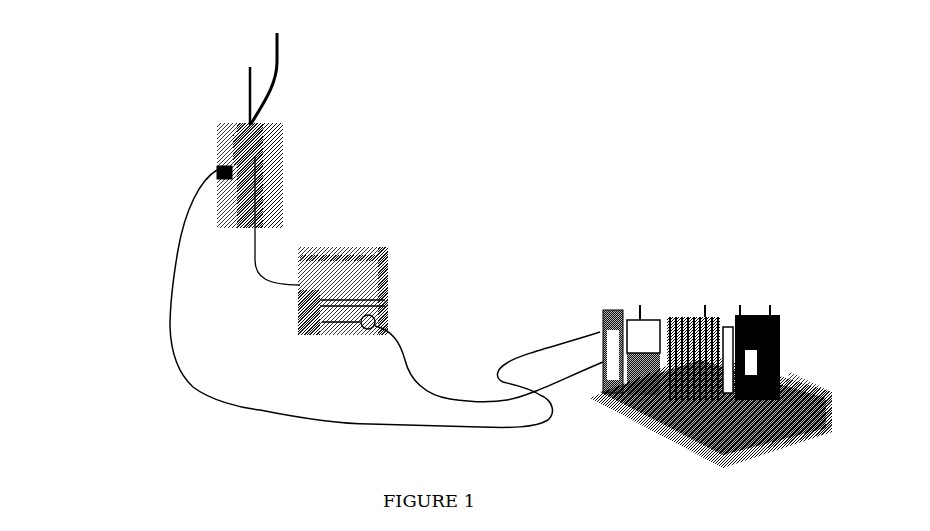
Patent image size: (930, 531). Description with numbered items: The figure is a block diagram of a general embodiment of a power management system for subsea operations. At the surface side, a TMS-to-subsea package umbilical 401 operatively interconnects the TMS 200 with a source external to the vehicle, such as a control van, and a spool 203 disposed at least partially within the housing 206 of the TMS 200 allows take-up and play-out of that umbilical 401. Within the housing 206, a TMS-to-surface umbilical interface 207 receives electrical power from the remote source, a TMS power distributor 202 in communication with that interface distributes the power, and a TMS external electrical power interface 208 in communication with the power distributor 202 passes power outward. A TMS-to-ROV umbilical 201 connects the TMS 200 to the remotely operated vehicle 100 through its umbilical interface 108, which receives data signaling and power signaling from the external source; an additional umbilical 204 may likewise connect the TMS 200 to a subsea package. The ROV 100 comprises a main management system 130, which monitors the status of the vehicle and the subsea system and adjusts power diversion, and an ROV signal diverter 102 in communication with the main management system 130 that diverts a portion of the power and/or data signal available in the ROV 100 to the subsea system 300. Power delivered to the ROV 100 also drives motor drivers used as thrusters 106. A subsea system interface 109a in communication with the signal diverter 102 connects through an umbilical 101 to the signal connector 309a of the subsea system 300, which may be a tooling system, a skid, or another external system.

The remotely operated vehicle (ROV) 100 is at (332, 240).
The umbilical 101 is at (398, 347).
The ROV signal diverter 102 is at (360, 321).
The thrusters 106 is at (378, 248).
The umbilical interface 108 is at (297, 286).
The subsea system interface 109a is at (382, 328).
The main management system 130 is at (389, 278).
The TMS 200 is at (283, 125).
The TMS-to-ROV umbilical 201 is at (257, 242).
The TMS power distributor 202 is at (218, 168).
The spool 203 is at (233, 152).
The umbilical 204 is at (178, 249).
The housing 206 is at (283, 142).
The TMS-to-surface umbilical interface 207 is at (272, 66).
The TMS external electrical power interface 208 is at (218, 173).
The subsea system 300 is at (594, 310).
The signal connector 309a is at (603, 362).
The TMS-to-subsea package umbilical 401 is at (250, 77).